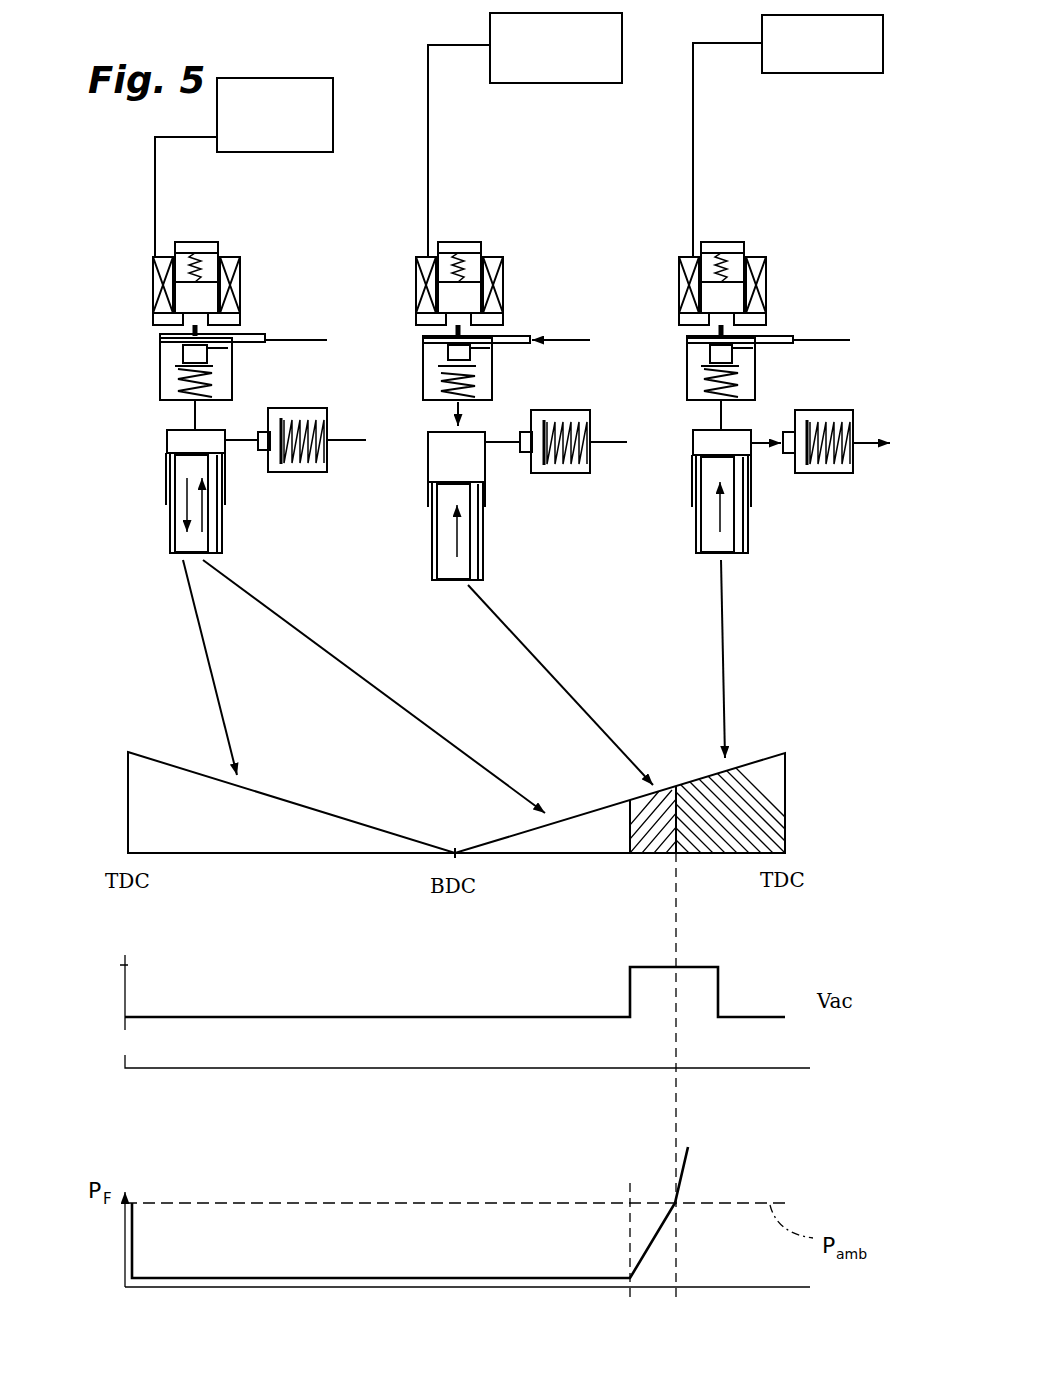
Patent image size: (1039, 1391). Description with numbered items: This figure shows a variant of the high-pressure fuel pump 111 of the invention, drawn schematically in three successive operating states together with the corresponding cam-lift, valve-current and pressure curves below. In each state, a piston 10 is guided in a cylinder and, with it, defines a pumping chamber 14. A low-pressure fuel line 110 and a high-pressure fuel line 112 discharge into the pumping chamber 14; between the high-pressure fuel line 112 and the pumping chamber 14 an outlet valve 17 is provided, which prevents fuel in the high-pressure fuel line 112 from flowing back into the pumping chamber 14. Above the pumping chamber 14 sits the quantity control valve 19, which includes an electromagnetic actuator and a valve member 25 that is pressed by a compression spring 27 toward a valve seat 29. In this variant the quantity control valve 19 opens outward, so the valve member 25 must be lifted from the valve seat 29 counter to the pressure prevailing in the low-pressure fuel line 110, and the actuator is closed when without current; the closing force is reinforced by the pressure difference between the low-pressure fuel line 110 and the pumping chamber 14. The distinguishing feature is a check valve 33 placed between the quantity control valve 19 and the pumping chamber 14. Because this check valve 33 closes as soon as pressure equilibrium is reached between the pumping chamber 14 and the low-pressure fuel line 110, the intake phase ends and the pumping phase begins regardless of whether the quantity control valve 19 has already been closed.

The piston 10 is at (183, 538).
The pumping chamber 14 is at (173, 442).
The outlet valve 17 is at (305, 473).
The quantity control valve 19 is at (146, 275).
The valve member 25 is at (164, 343).
The compression spring 27 is at (190, 268).
The valve seat 29 is at (210, 348).
The check valve 33 is at (156, 377).
The low-pressure fuel line 110 is at (307, 336).
The high-pressure fuel pump 111 is at (222, 210).
The high-pressure fuel line 112 is at (352, 440).